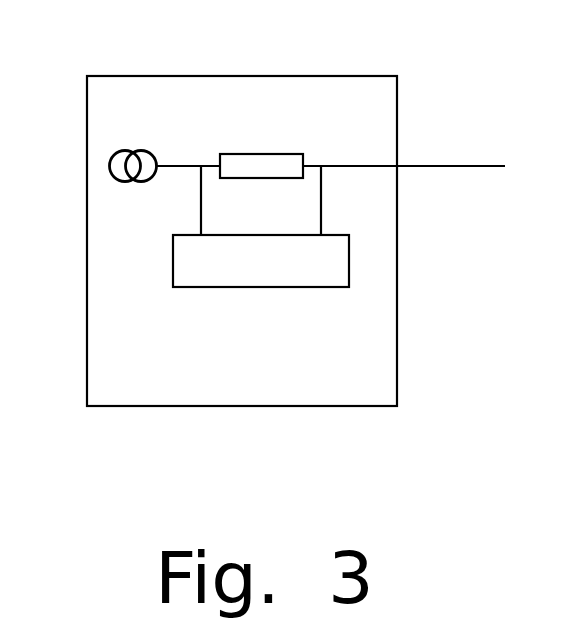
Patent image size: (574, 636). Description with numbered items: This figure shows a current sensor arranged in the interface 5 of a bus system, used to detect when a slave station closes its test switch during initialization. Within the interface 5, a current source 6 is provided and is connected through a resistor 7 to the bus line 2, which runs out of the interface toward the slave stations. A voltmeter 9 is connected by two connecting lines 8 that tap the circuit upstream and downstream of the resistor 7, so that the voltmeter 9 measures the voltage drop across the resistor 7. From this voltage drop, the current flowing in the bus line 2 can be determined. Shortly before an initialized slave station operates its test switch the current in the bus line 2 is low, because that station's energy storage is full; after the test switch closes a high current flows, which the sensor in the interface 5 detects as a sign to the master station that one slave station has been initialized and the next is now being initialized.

The bus line 2 is at (470, 163).
The interface 5 is at (345, 92).
The current source 6 is at (116, 152).
The resistor 7 is at (258, 157).
The connecting lines 8 is at (200, 199).
The voltmeter 9 is at (309, 276).